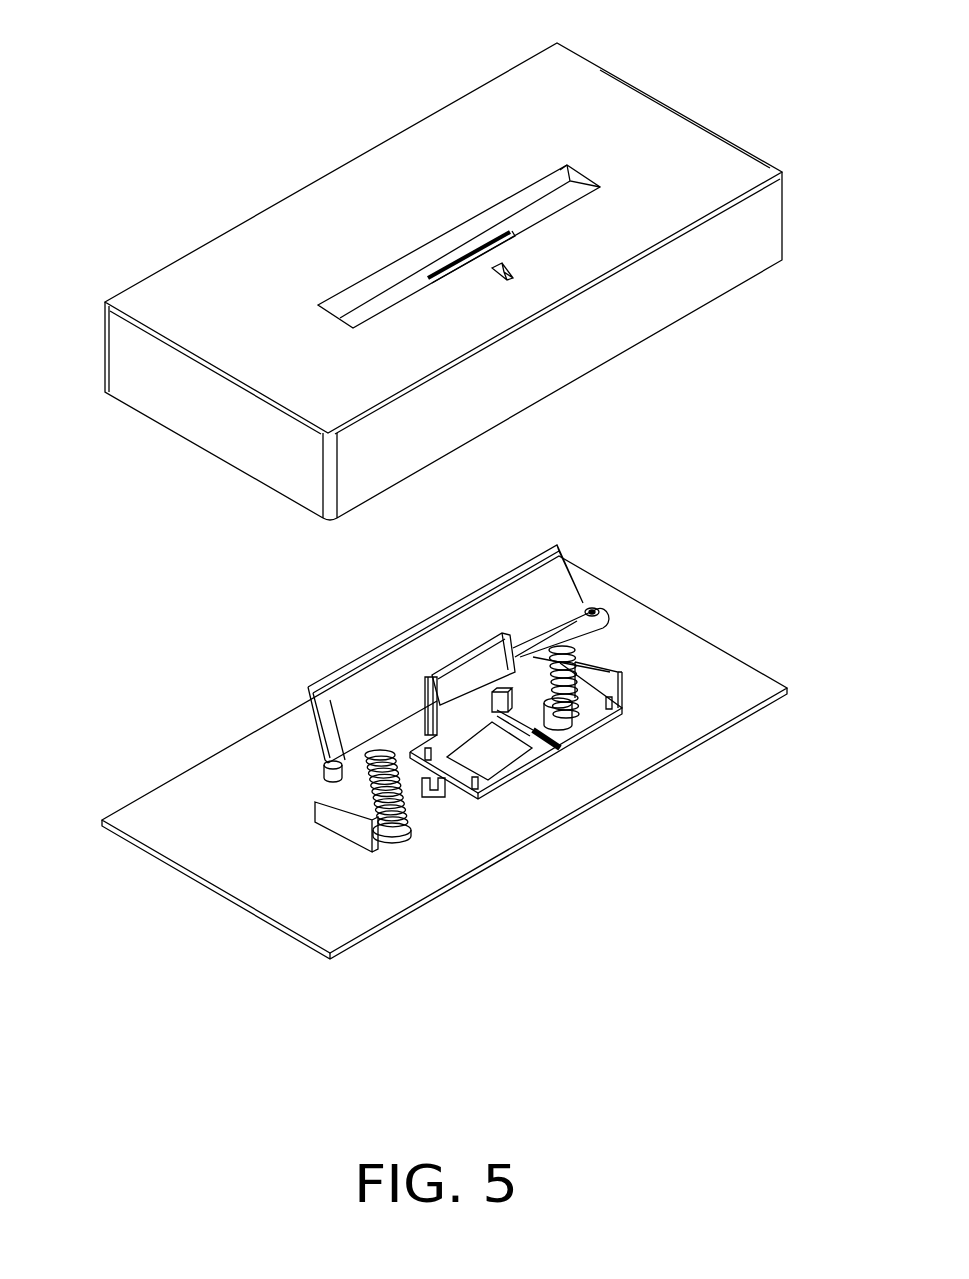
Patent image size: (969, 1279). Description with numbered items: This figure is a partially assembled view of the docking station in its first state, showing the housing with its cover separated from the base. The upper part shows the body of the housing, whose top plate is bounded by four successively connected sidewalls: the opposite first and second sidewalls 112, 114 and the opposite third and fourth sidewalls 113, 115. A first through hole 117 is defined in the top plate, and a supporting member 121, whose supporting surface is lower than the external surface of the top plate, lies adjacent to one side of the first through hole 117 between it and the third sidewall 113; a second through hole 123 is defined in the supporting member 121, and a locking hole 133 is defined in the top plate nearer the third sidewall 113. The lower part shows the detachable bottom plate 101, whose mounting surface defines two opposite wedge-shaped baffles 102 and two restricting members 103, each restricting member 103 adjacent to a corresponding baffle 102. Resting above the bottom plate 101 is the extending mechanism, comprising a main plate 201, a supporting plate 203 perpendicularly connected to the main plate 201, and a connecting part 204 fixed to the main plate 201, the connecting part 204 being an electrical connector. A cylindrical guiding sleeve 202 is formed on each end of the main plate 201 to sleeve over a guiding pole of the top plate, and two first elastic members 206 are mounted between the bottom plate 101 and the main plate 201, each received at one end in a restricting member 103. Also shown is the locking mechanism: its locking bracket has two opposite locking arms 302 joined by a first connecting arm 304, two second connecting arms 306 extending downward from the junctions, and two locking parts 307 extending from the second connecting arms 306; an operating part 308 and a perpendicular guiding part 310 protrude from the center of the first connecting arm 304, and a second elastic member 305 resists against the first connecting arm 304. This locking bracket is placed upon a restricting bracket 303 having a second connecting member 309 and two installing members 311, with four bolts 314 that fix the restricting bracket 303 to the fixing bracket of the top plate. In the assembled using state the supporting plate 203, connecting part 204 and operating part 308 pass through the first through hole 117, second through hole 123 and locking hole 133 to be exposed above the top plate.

The bottom plate 101 is at (722, 683).
The baffle 102 is at (335, 823).
The restricting member 103 is at (392, 837).
The first sidewall 112 is at (195, 415).
The third sidewall 113 is at (703, 265).
The second sidewall 114 is at (660, 95).
The fourth sidewall 115 is at (178, 255).
The first through hole 117 is at (355, 290).
The supporting member 121 is at (548, 200).
The second through hole 123 is at (457, 265).
The locking hole 133 is at (515, 275).
The main plate 201 is at (557, 638).
The guiding sleeve 202 is at (598, 612).
The supporting plate 203 is at (340, 697).
The connecting part 204 is at (482, 700).
The first elastic member 206 is at (400, 790).
The locking arm 302 is at (560, 697).
The restricting bracket 303 is at (515, 723).
The first connecting arm 304 is at (430, 697).
The second elastic member 305 is at (520, 750).
The second connecting arm 306 is at (600, 728).
The locking part 307 is at (565, 737).
The operating part 308 is at (455, 717).
The second connecting member 309 is at (490, 760).
The guiding part 310 is at (548, 740).
The installing member 311 is at (460, 770).
The bolt 314 is at (618, 712).